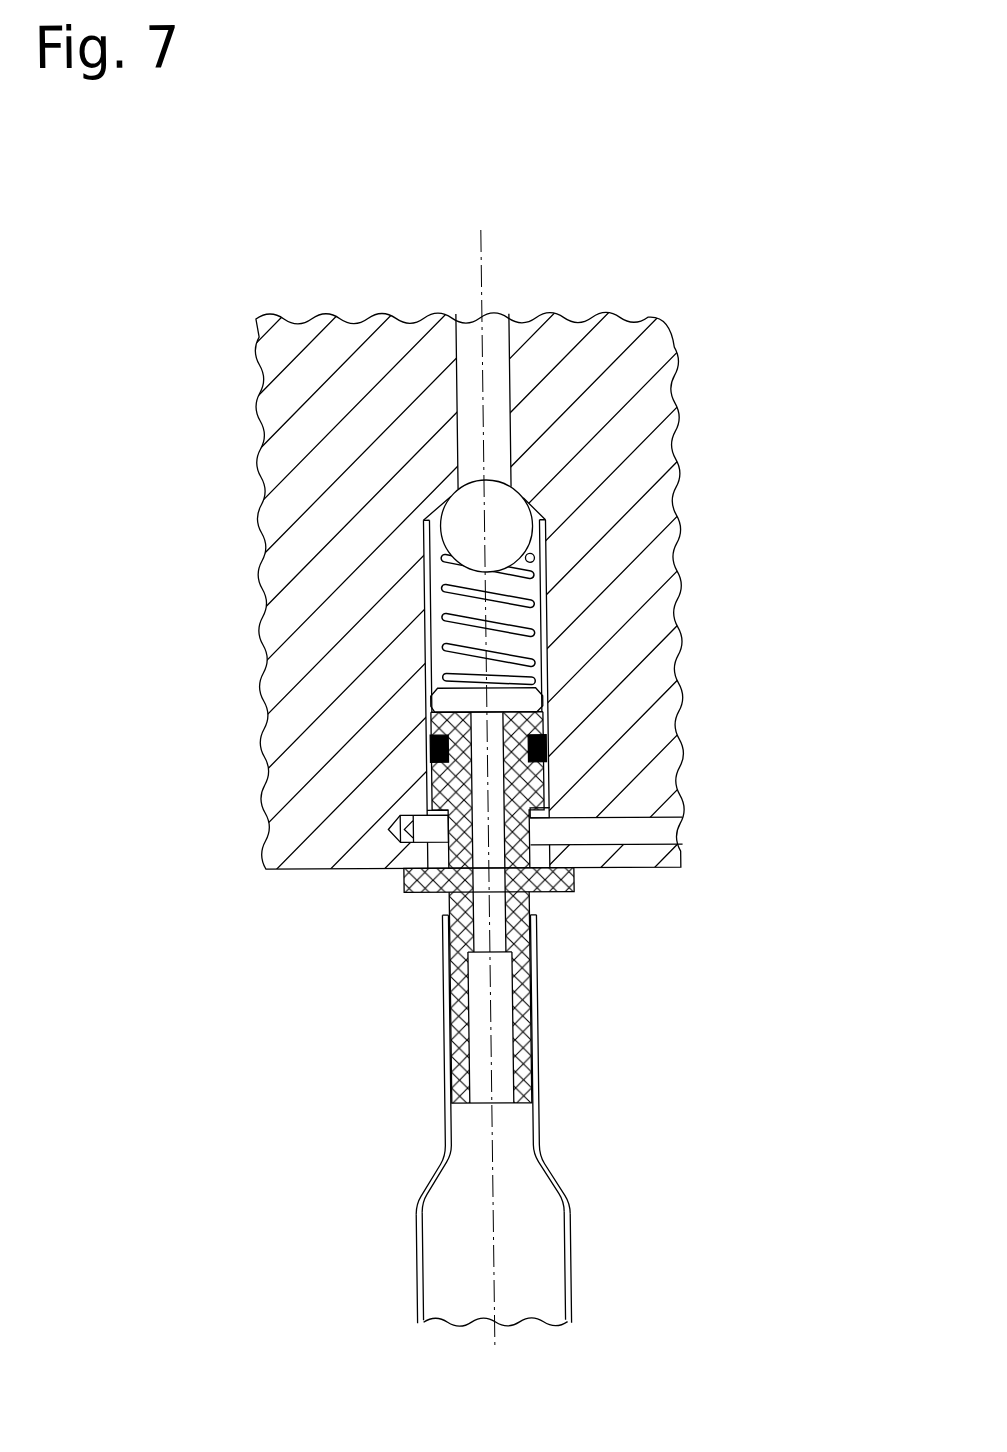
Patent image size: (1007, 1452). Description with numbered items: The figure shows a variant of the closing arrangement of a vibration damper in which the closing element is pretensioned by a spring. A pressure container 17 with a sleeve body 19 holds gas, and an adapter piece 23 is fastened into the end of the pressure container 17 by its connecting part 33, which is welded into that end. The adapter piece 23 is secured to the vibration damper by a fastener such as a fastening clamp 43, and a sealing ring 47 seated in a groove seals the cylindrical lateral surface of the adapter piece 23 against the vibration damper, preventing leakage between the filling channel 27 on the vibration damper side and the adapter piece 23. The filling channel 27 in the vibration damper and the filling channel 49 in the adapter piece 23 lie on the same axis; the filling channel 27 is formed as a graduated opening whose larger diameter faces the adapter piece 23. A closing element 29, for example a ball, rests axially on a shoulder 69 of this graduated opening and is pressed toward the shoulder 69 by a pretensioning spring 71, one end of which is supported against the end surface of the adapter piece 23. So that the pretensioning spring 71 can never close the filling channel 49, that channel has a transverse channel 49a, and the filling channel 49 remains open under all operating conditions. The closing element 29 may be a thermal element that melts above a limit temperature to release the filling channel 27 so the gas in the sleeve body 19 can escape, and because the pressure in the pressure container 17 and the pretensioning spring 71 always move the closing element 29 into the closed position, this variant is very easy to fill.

The pressure container 17 is at (587, 1170).
The sleeve body 19 is at (412, 1273).
The adapter piece 23 is at (555, 912).
The filling channel 27 is at (546, 547).
The closing element 29 is at (461, 527).
The connecting part 33 is at (452, 1027).
The fastening clamp 43 is at (665, 832).
The sealing ring 47 is at (431, 743).
The filling channel 49 is at (481, 883).
The transverse channel 49a is at (458, 700).
The shoulder 69 is at (454, 497).
The pretensioning spring 71 is at (447, 617).